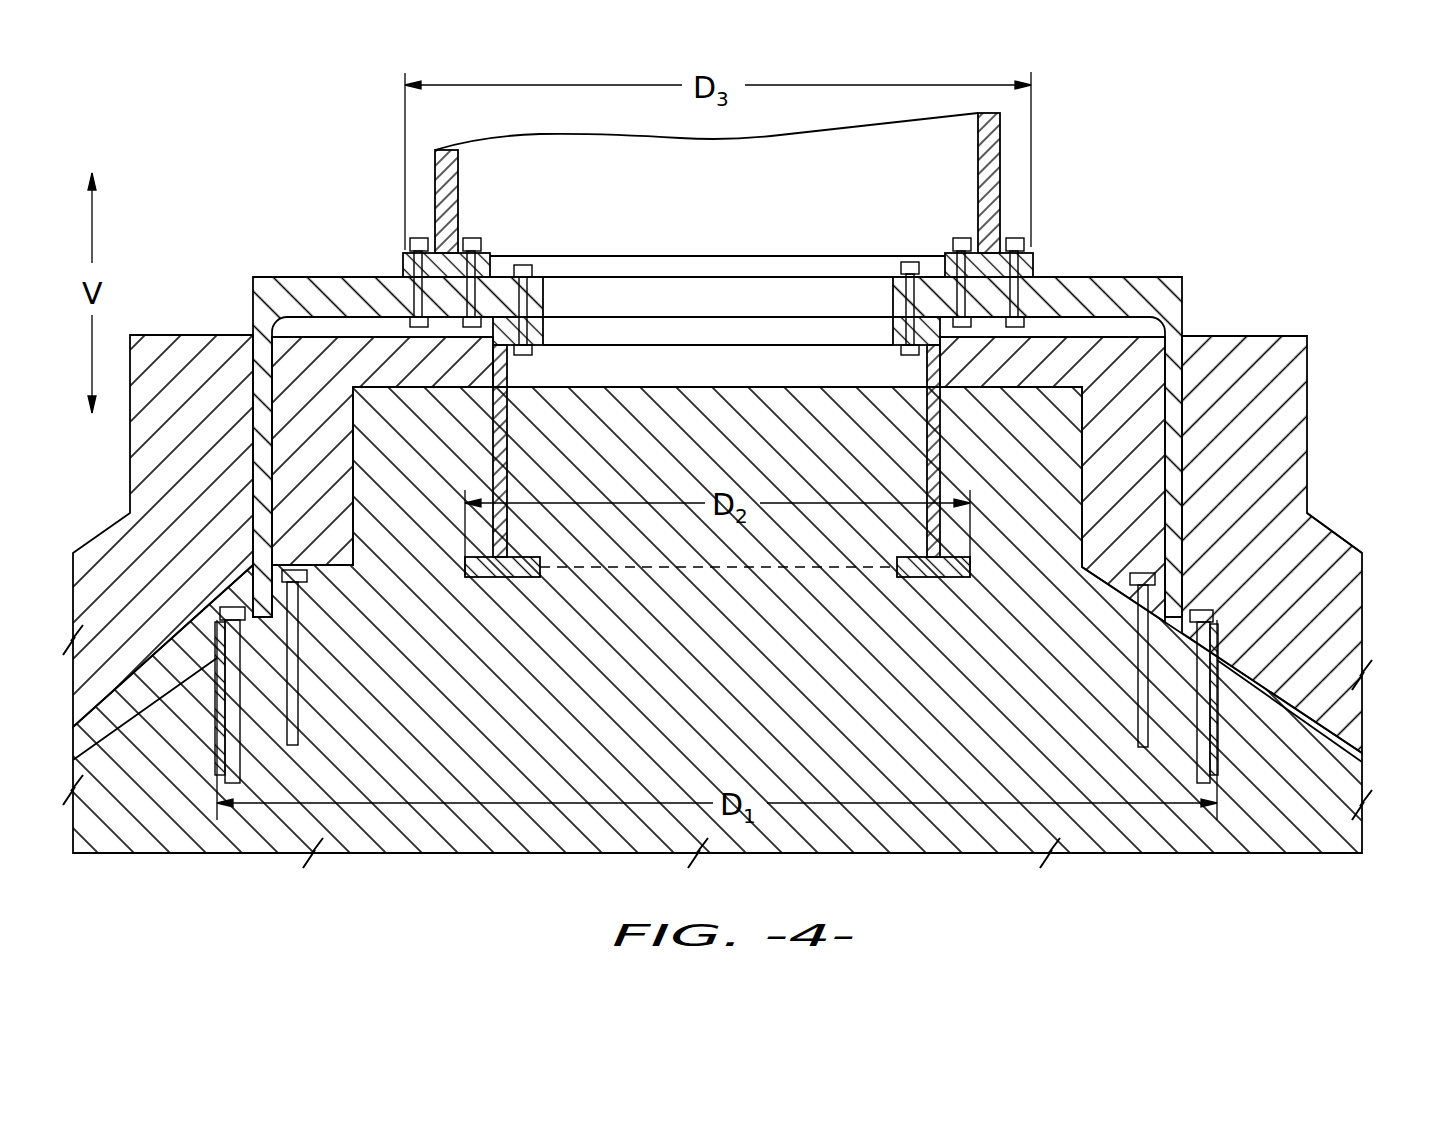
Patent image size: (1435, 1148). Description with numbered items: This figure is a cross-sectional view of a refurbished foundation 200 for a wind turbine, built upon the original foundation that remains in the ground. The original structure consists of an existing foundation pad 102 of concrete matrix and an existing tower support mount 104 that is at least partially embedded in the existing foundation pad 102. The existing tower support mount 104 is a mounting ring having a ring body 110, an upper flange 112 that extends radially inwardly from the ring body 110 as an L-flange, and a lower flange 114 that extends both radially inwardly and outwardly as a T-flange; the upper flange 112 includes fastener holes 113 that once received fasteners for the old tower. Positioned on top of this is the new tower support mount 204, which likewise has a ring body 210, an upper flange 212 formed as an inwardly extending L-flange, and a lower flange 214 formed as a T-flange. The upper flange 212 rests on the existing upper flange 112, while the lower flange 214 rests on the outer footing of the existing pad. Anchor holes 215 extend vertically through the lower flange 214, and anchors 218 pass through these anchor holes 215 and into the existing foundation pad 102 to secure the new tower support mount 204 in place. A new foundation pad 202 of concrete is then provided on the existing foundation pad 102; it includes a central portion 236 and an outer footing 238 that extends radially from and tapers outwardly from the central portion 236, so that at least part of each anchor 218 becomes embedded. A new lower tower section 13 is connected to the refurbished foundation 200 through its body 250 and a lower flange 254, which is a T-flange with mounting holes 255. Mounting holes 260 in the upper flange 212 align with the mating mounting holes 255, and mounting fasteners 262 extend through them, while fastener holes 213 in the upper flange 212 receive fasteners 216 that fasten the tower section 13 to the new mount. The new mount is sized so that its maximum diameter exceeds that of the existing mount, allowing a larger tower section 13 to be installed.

The lower tower section 13 is at (1007, 140).
The body 250 is at (993, 177).
The lower flange 254 is at (1037, 270).
The mounting holes 255 is at (1035, 263).
The fastener holes 213 is at (887, 300).
The fasteners 216 is at (893, 308).
The upper flange 212 is at (1142, 288).
The new tower support mount 204 is at (1210, 350).
The central portion 236 is at (1273, 390).
The new foundation pad 202 is at (1340, 420).
The refurbished foundation 200 is at (1307, 223).
The ring body 210 is at (1182, 483).
The mounting holes 260 is at (1012, 303).
The mounting fasteners 262 is at (1062, 300).
The outer footing 238 is at (1313, 540).
The lower flange 214 is at (1182, 583).
The anchor holes 215 is at (1133, 582).
The anchors 218 is at (1137, 693).
The ring body 110 is at (493, 430).
The upper flange 112 is at (548, 333).
The fastener holes 113 is at (546, 337).
The lower flange 114 is at (518, 582).
The existing tower support mount 104 is at (523, 602).
The existing foundation pad 102 is at (420, 770).